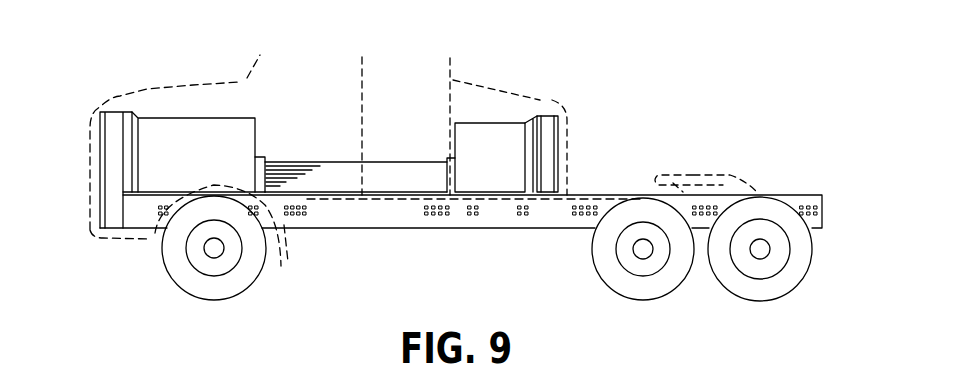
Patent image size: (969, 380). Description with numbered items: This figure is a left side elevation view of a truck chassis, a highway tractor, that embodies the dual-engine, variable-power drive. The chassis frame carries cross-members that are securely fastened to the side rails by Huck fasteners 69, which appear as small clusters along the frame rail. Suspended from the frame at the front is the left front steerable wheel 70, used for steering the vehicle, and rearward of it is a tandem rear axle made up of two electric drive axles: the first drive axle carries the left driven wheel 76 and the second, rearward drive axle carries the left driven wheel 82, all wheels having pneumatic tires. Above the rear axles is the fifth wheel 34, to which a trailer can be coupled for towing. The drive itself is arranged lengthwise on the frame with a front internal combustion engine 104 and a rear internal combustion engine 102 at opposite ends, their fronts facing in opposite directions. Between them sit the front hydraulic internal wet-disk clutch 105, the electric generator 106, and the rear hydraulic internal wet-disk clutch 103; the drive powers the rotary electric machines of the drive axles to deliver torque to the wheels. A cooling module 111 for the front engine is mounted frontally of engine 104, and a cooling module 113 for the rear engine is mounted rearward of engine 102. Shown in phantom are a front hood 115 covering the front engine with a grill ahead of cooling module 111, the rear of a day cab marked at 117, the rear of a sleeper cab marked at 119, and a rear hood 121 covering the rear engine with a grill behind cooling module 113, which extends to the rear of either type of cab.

The fifth wheel 34 is at (693, 175).
The Huck fasteners 69 is at (160, 218).
The left front steerable wheel 70 is at (250, 287).
The left driven wheel of first drive axle 76 is at (608, 293).
The left driven wheel of second drive axle 82 is at (783, 297).
The rear internal combustion engine 102 is at (503, 123).
The rear hydraulic internal wet-disk clutch 103 is at (448, 158).
The front internal combustion engine 104 is at (200, 118).
The front hydraulic internal wet-disk clutch 105 is at (267, 158).
The electric generator 106 is at (420, 162).
The cooling module 111 is at (115, 110).
The cooling module 113 is at (558, 150).
The front hood 115 is at (237, 82).
The rear of day cab 117 is at (363, 80).
The rear of sleeper cab 119 is at (453, 80).
The rear hood 121 is at (545, 100).